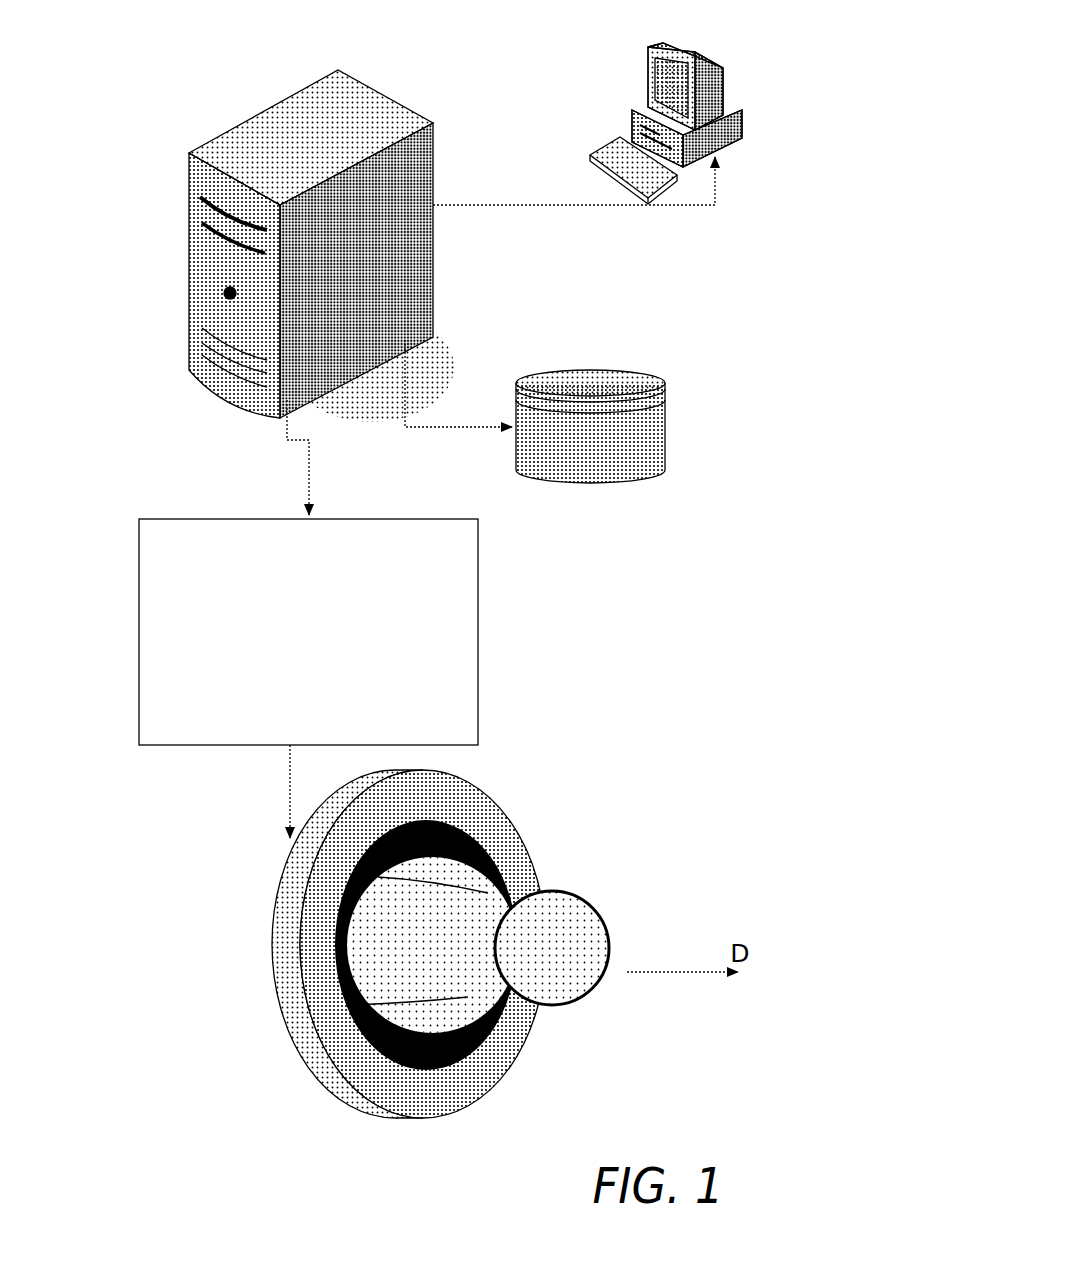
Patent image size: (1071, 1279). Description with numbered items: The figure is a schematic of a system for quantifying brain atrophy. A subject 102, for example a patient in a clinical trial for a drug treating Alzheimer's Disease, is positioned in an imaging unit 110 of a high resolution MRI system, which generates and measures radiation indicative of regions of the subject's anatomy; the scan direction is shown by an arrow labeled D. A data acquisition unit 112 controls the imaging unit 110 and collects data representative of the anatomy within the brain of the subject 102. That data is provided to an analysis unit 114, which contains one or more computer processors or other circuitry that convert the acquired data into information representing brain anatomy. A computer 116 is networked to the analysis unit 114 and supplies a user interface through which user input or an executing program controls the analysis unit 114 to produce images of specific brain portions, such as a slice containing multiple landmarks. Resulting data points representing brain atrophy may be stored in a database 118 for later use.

The subject 102 is at (577, 897).
The imaging unit 110 is at (408, 944).
The data acquisition unit 112 is at (139, 637).
The analysis unit 114 is at (252, 118).
The computer 116 is at (700, 55).
The database 118 is at (613, 482).